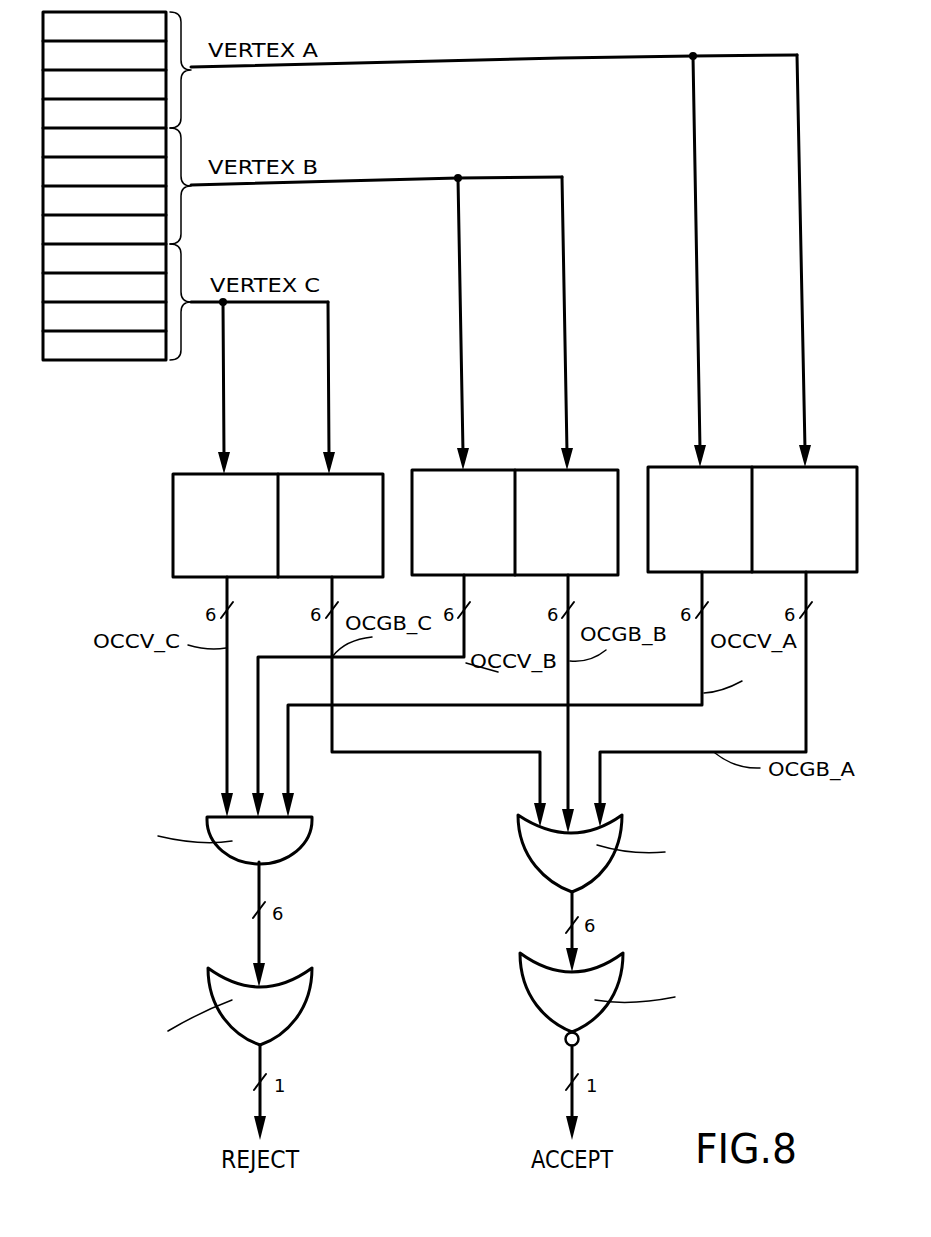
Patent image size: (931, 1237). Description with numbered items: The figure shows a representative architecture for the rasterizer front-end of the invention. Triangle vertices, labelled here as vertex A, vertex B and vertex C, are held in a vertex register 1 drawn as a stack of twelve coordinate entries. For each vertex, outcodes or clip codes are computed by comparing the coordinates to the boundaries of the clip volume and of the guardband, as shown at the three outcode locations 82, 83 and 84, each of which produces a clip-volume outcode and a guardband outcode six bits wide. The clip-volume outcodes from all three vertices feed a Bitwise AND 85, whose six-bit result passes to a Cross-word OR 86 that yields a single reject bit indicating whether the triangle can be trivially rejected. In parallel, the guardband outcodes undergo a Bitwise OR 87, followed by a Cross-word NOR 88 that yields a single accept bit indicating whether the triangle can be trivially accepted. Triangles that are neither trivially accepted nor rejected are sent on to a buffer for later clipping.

The vertex list / vertex data register 1 is at (133, 366).
The outcode computation location 82 is at (175, 523).
The outcode computation location 83 is at (437, 478).
The outcode computation location 84 is at (677, 470).
The Bitwise AND 85 is at (297, 838).
The Cross-word OR 86 is at (293, 1025).
The Bitwise OR 87 is at (545, 860).
The Cross-word NOR 88 is at (548, 1022).